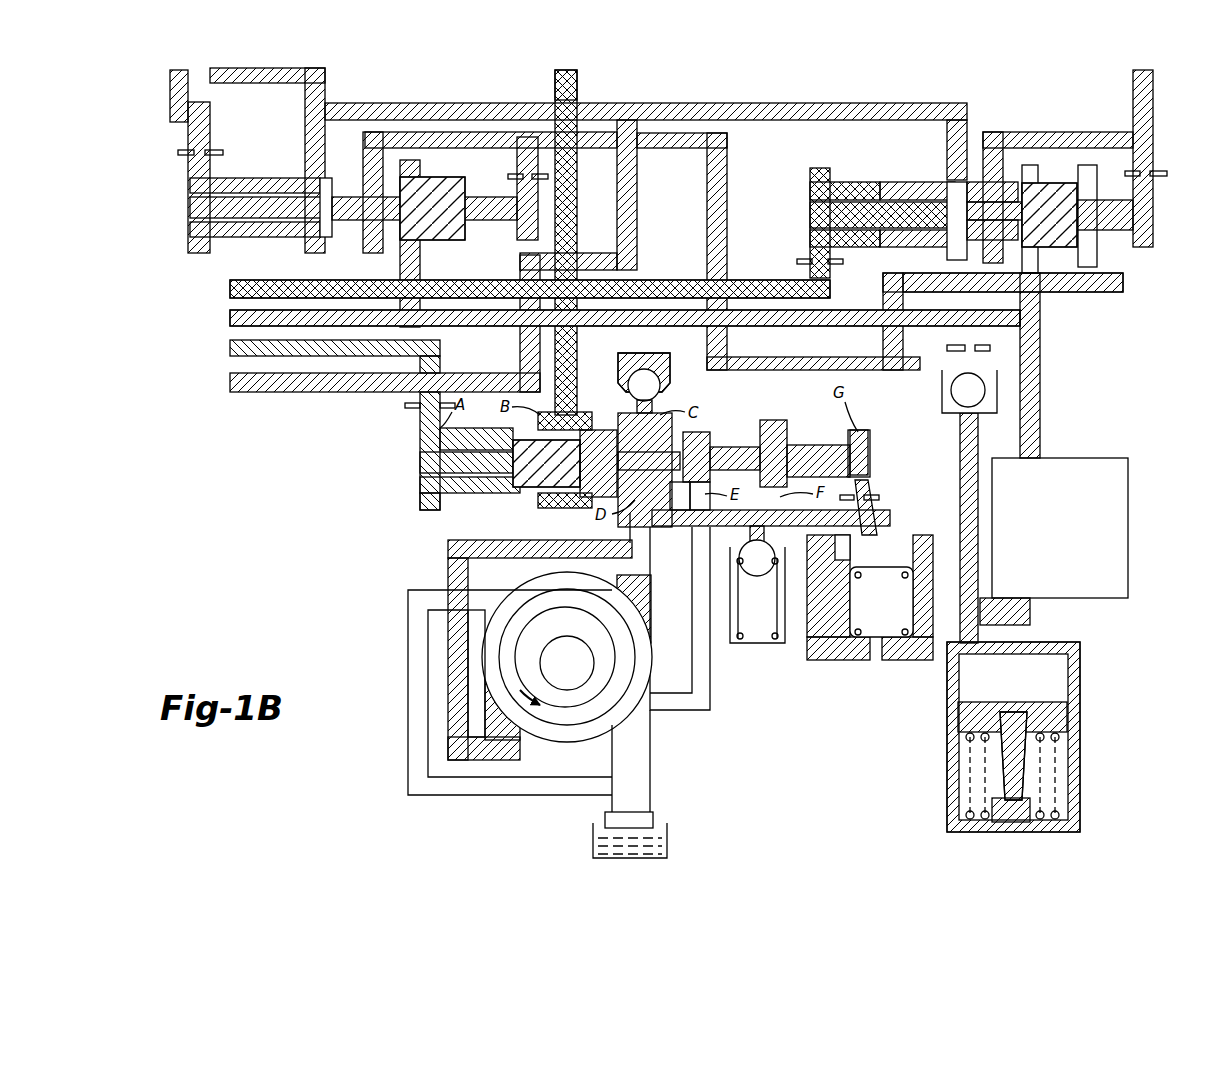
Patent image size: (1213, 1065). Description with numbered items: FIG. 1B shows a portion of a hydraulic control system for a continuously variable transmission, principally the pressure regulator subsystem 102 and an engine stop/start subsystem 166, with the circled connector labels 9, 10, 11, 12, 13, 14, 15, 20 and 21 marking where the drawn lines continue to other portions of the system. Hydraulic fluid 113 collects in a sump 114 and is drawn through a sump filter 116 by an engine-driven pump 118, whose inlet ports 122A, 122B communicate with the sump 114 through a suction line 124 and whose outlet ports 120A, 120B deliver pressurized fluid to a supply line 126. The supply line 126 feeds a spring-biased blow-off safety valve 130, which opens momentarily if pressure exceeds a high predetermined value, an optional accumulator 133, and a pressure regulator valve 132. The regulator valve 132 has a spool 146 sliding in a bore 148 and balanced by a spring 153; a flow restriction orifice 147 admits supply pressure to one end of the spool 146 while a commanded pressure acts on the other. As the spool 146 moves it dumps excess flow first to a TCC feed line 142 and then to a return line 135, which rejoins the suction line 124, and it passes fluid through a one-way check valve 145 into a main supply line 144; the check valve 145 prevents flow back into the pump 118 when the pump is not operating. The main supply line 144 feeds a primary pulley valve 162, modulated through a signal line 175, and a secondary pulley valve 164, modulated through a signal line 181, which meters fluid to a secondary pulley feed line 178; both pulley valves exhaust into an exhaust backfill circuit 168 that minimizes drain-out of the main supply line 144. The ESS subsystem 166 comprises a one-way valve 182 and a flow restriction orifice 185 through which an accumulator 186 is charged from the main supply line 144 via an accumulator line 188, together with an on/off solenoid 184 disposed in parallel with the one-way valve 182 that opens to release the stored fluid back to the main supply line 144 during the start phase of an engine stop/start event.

The hydraulic line port 9 is at (518, 290).
The hydraulic line port 10 is at (613, 321).
The hydraulic line port 11 is at (323, 356).
The hydraulic line port 12 is at (373, 381).
The hydraulic line port 13 is at (181, 84).
The hydraulic line port 14 is at (256, 149).
The hydraulic line port 15 is at (566, 73).
The hydraulic line port 20 is at (1144, 146).
The hydraulic line port 21 is at (1015, 365).
The pressure regulator subsystem 102 is at (322, 553).
The hydraulic fluid 113 is at (660, 842).
The sump 114 is at (593, 830).
The sump filter 116 is at (653, 816).
The pump 118 is at (548, 580).
The outlet port 120A is at (640, 615).
The outlet port 120B is at (500, 710).
The inlet port 122A is at (625, 712).
The inlet port 122B is at (503, 602).
The suction line 124 is at (650, 780).
The supply line 126 is at (668, 540).
The blow-off safety valve 130 is at (775, 645).
The pressure regulator valve 132 is at (874, 438).
The accumulator 133 is at (908, 535).
The return line 135 is at (710, 695).
The TCC feed line 142 is at (555, 85).
The main supply line 144 is at (750, 300).
The one-way check valve 145 is at (665, 378).
The spool 146 is at (605, 440).
The flow restriction orifice 147 is at (866, 495).
The bore 148 is at (470, 498).
The spring 153 is at (422, 448).
The primary pulley valve 162 is at (1132, 212).
The secondary pulley valve 164 is at (278, 178).
The ESS subsystem 166 is at (1105, 660).
The exhaust backfill circuit 168 is at (398, 103).
The signal line 175 is at (660, 285).
The secondary pulley feed line 178 is at (1083, 295).
The signal line 181 is at (190, 122).
The one-way valve 182 is at (997, 405).
The on/off solenoid 184 is at (1122, 458).
The flow restriction orifice 185 is at (948, 355).
The accumulator 186 is at (1080, 758).
The accumulator line 188 is at (1030, 612).